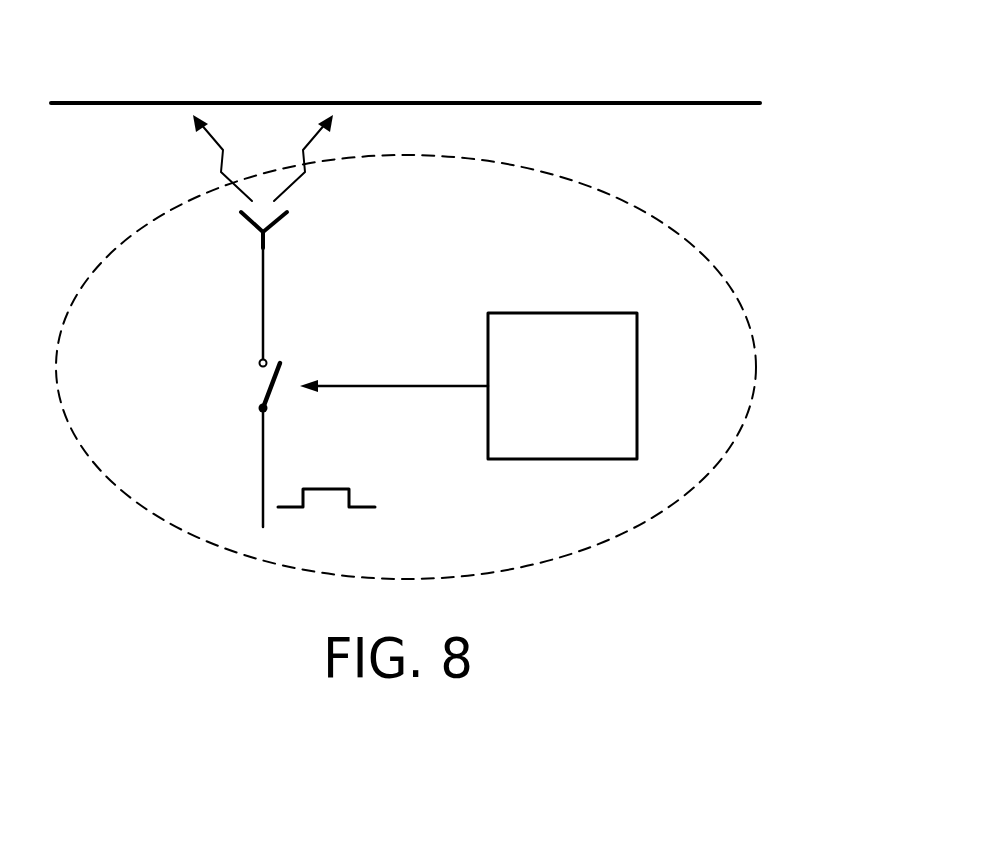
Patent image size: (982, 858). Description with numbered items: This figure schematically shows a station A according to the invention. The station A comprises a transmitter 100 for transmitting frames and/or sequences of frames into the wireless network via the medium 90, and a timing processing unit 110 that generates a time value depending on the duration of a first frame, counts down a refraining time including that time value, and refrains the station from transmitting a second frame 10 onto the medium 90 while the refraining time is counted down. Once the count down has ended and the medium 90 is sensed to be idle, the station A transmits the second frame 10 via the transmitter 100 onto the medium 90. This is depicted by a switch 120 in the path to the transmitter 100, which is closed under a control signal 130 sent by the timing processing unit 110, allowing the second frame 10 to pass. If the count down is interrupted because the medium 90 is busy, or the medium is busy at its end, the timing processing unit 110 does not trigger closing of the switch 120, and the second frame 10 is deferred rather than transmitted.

The medium 90 is at (577, 103).
The transmitter 100 is at (265, 243).
The switch 120 is at (261, 400).
The timing processing unit 110 is at (563, 313).
The control signal 130 is at (447, 386).
The second frame 10 is at (340, 489).
The station A is at (766, 367).